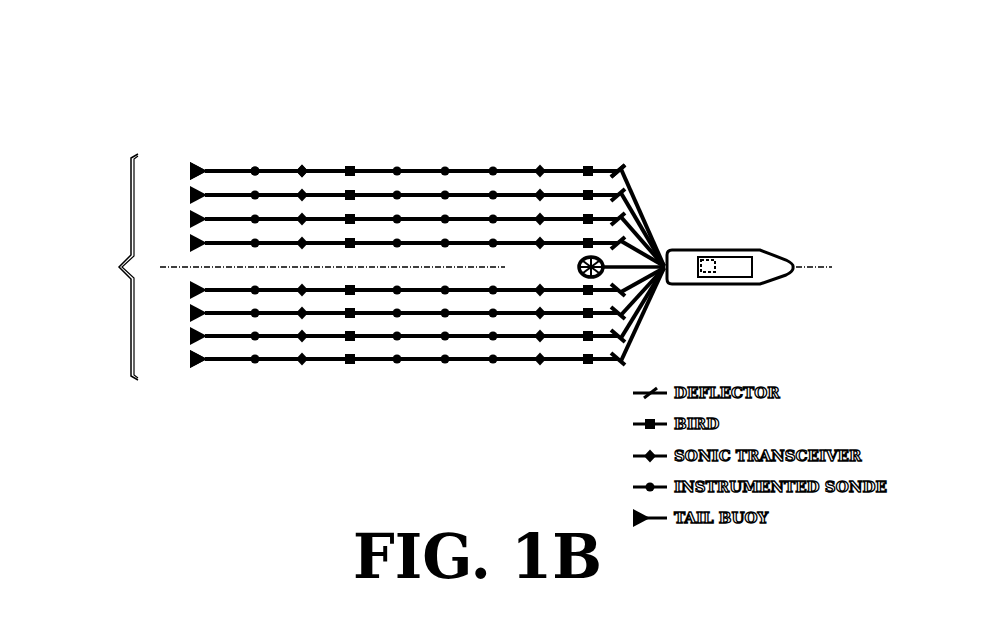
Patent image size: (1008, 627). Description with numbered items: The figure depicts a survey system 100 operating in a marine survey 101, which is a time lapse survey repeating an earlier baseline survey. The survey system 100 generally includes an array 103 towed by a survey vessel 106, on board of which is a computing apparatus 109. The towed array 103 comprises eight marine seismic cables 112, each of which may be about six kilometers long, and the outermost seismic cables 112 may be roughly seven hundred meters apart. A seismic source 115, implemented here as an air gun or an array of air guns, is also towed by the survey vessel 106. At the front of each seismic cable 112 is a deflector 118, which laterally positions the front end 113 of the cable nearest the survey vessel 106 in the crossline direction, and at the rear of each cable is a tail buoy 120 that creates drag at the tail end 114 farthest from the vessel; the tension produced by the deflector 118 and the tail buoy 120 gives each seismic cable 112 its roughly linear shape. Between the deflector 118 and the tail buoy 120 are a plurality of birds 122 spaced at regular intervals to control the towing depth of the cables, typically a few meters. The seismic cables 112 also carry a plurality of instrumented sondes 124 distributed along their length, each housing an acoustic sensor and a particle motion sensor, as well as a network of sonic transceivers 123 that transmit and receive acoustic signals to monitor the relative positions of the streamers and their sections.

The survey system 100 is at (266, 96).
The marine survey 101 is at (118, 83).
The array 103 is at (99, 267).
The survey vessel 106 is at (764, 249).
The computing apparatus 109 is at (710, 279).
The marine seismic cable 112 is at (418, 170).
The front end 113 is at (578, 363).
The tail end 114 is at (210, 366).
The seismic source 115 is at (577, 267).
The deflector 118 is at (626, 166).
The tail buoy 120 is at (192, 168).
The bird 122 is at (585, 170).
The sonic transceiver 123 is at (300, 170).
The instrumented sonde 124 is at (254, 170).